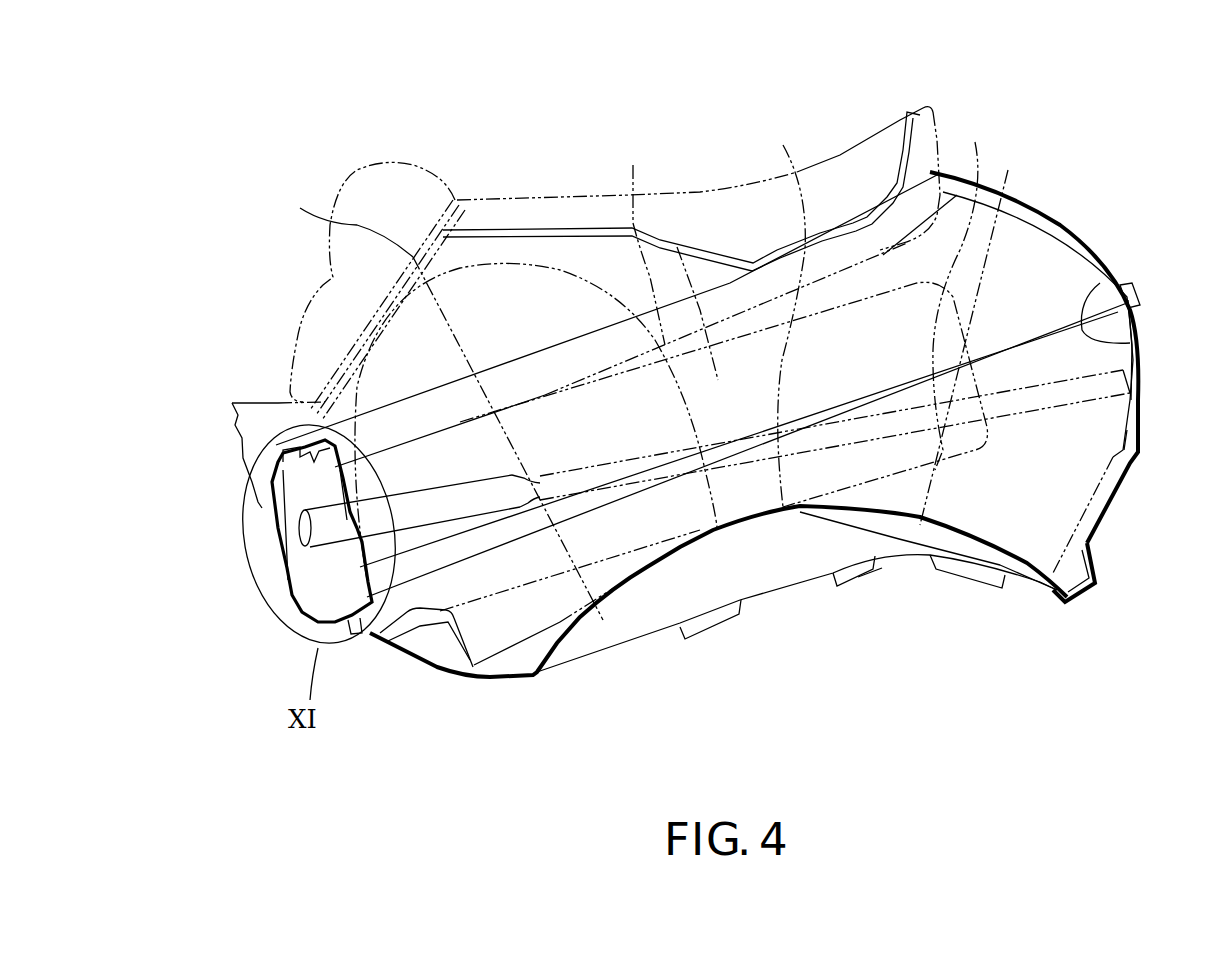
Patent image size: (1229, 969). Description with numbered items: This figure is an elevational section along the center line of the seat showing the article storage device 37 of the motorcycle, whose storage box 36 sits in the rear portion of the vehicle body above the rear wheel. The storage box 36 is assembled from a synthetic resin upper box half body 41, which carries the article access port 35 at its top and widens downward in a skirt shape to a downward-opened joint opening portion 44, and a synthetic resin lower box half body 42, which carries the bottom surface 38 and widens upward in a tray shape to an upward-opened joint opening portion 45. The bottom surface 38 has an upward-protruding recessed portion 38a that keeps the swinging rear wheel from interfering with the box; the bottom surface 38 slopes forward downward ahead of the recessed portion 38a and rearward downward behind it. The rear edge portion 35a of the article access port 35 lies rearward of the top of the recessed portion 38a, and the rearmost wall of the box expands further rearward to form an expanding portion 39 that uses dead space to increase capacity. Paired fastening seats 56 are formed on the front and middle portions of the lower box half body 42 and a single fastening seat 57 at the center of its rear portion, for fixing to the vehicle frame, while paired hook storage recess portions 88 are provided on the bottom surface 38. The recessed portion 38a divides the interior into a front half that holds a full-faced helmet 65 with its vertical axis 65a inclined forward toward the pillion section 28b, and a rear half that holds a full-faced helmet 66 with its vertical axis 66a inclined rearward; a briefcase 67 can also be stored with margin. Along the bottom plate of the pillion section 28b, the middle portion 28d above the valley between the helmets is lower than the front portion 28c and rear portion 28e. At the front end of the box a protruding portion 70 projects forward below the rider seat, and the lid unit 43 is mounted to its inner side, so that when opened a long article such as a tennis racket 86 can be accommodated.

The article storage device 37 is at (672, 128).
The storage box 36 is at (1080, 185).
The pillion section 28b is at (505, 200).
The full-faced helmet 65 is at (557, 263).
The article access port 35 is at (642, 242).
The briefcase 67 is at (720, 400).
The full-faced helmet 66 is at (784, 313).
The rear edge portion 35a is at (875, 158).
The vertical axis 66a is at (964, 319).
The upper box half body 41 is at (1113, 250).
The joint opening portion 45 is at (1112, 278).
The expanding portion 39 is at (1135, 325).
The joint opening portion 44 is at (1133, 343).
The lower box half body 42 is at (1112, 515).
The fastening seat 57 is at (1083, 600).
The recessed portion 38a is at (760, 520).
The bottom surface 38 is at (637, 640).
The hook storage recess portion 88 is at (723, 627).
The fastening seat 56 is at (860, 575).
The protruding portion 70 is at (262, 533).
The lid unit 43 is at (302, 422).
The front portion 28c is at (393, 307).
The vertical axis 65a is at (444, 391).
The middle portion 28d is at (716, 345).
The rear portion 28e is at (913, 240).
The tennis racket 86 is at (653, 456).